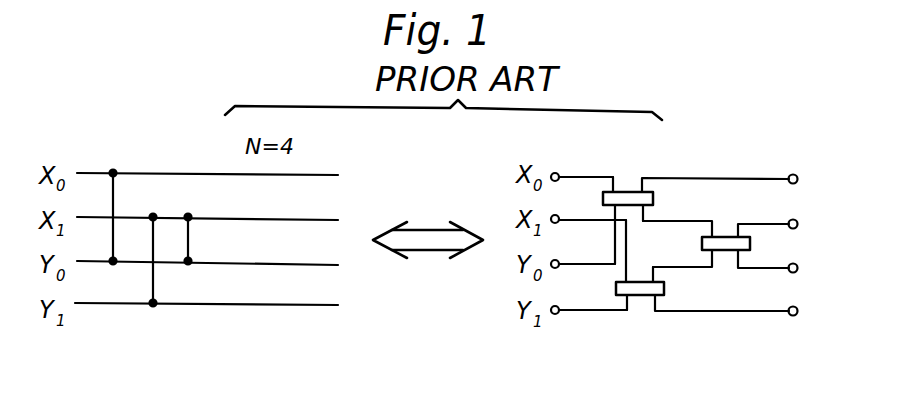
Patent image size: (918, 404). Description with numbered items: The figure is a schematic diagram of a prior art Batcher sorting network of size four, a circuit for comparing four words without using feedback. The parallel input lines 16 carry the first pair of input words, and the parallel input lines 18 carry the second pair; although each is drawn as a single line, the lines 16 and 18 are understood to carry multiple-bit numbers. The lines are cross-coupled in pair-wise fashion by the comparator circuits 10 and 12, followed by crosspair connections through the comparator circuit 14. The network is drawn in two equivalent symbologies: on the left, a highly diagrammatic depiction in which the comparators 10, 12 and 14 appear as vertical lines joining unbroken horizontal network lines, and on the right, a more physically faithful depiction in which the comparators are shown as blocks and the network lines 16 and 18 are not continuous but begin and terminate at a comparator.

The comparator circuit 10 is at (116, 201).
The comparator circuit 12 is at (154, 238).
The comparator circuit 14 is at (191, 243).
The input lines 16 is at (93, 217).
The input lines 18 is at (90, 262).